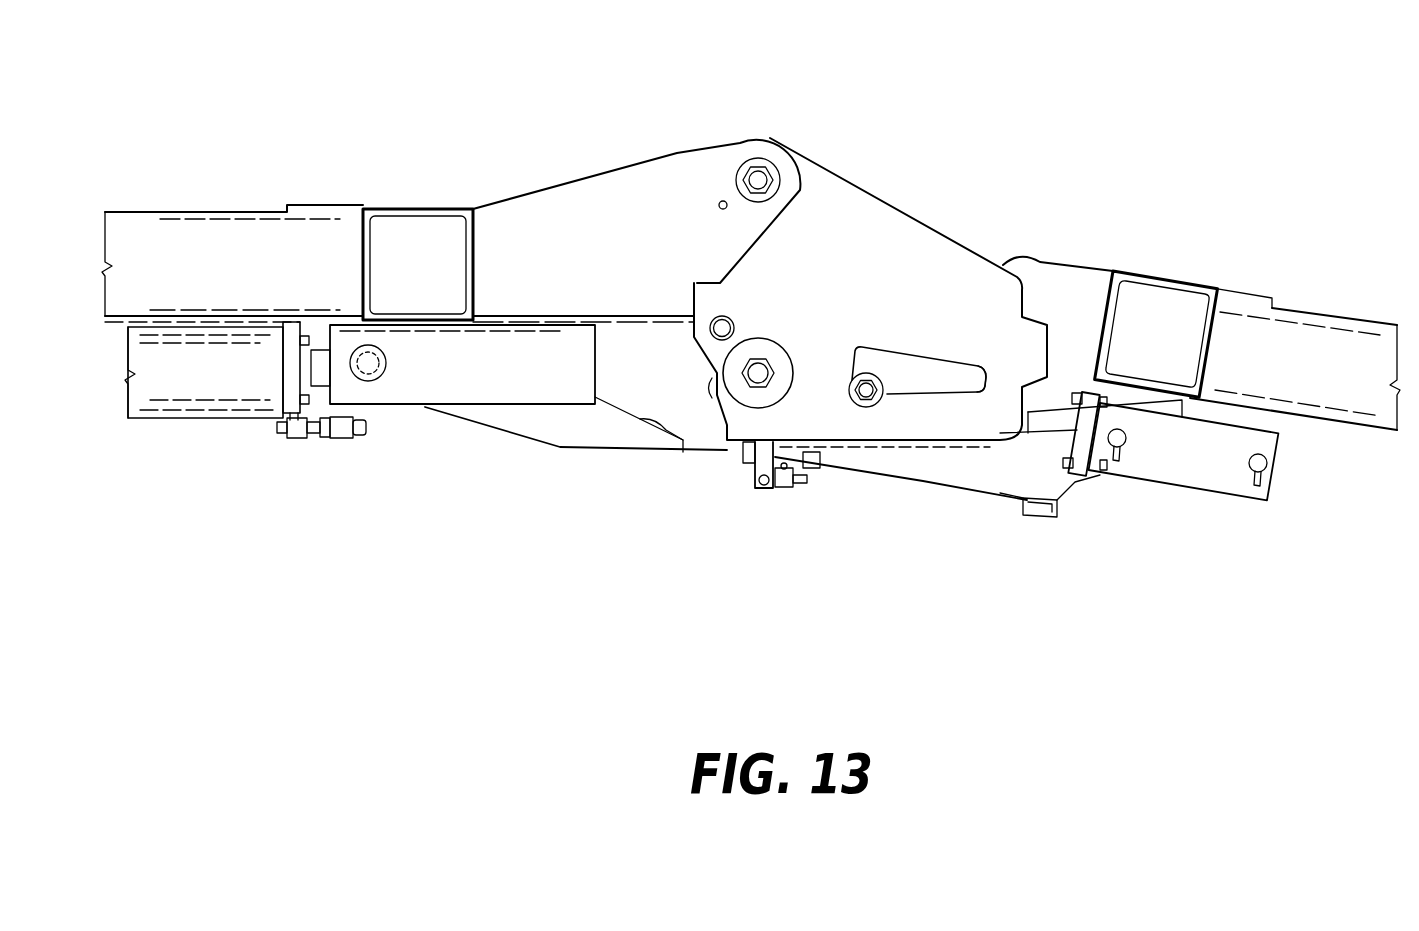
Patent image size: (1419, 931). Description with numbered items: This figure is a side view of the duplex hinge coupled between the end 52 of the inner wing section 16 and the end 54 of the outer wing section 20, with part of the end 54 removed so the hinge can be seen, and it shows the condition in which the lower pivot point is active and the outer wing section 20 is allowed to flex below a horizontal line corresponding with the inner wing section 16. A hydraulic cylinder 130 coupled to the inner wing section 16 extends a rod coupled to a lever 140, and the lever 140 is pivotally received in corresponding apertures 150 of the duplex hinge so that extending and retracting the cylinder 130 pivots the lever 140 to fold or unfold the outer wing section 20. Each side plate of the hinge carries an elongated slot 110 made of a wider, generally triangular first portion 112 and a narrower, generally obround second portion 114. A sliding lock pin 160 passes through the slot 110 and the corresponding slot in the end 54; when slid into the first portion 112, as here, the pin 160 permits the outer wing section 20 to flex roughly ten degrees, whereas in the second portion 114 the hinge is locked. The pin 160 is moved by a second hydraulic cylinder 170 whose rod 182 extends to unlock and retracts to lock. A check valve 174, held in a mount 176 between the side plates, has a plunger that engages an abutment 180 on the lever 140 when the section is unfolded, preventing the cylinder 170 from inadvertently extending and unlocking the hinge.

The inner wing section 16 is at (212, 243).
The outer wing section 20 is at (1295, 343).
The end of inner wing section 52 is at (582, 218).
The end of outer wing section 54 is at (1070, 283).
The elongated slot 110 is at (914, 373).
The first portion of slot 112 is at (893, 390).
The second portion of slot 114 is at (965, 375).
The hydraulic cylinder 130 is at (205, 370).
The lever 140 is at (636, 368).
The apertures 150 is at (724, 325).
The lock pin 160 is at (867, 386).
The hydraulic cylinder 170 is at (1195, 465).
The check valve 174 is at (805, 453).
The mount 176 is at (732, 450).
The abutment 180 is at (703, 443).
The rod 182 is at (1043, 430).